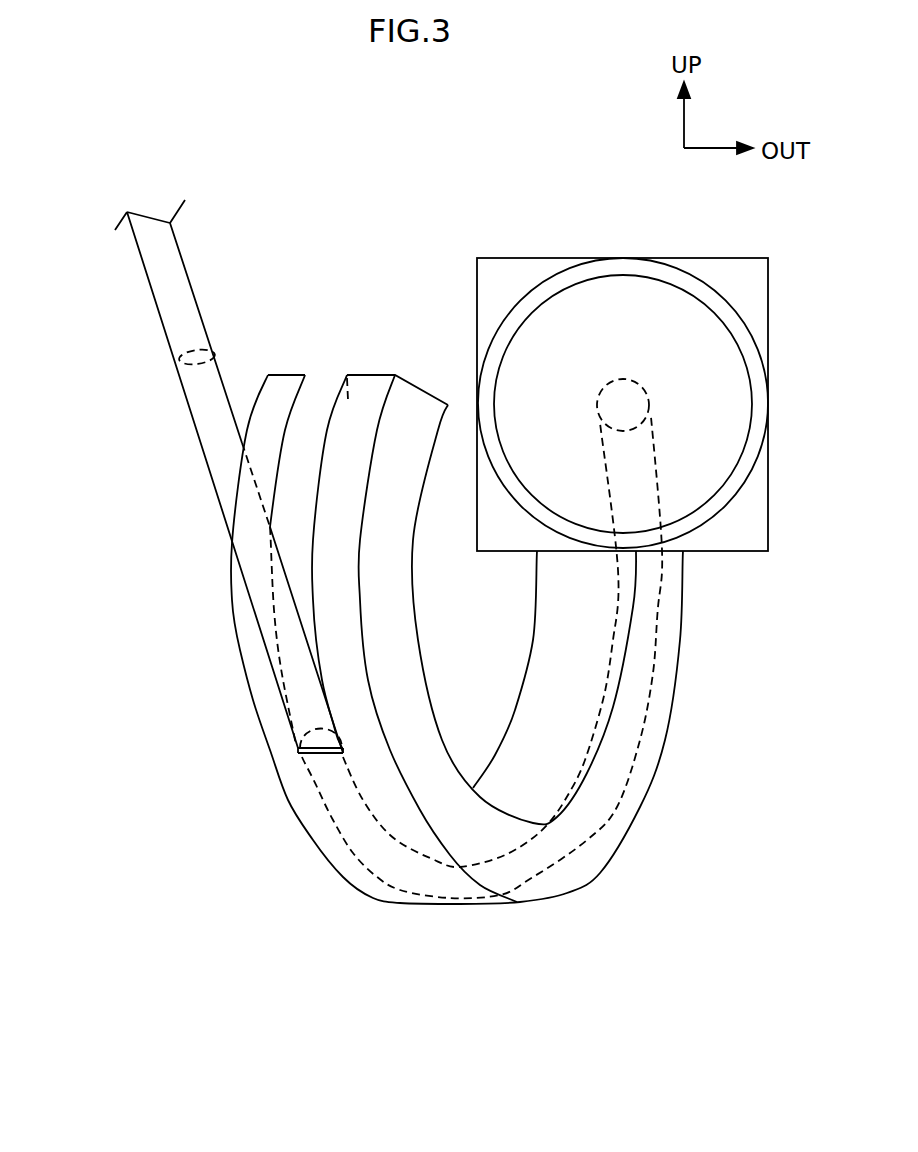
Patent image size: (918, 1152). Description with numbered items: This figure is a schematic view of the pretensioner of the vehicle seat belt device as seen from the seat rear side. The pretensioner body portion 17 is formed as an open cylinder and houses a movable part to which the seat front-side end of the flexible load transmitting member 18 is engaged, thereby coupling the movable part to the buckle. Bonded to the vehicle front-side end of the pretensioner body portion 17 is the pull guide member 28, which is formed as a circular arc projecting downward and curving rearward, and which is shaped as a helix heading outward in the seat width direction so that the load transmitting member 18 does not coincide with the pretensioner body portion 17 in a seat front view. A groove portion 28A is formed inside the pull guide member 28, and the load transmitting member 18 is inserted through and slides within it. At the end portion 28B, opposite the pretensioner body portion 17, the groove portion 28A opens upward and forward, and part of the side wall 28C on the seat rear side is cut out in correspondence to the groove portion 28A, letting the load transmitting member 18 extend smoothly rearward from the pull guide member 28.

The pretensioner body portion 17 is at (722, 293).
The load transmitting member 18 is at (190, 270).
The pull guide member 28 is at (281, 375).
The groove portion 28A is at (336, 406).
The end portion 28B is at (377, 373).
The side wall 28C is at (330, 846).